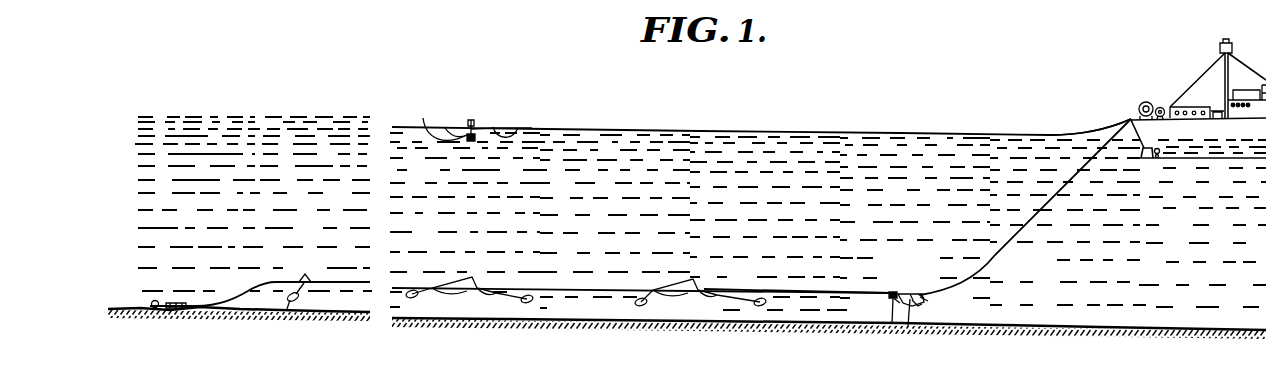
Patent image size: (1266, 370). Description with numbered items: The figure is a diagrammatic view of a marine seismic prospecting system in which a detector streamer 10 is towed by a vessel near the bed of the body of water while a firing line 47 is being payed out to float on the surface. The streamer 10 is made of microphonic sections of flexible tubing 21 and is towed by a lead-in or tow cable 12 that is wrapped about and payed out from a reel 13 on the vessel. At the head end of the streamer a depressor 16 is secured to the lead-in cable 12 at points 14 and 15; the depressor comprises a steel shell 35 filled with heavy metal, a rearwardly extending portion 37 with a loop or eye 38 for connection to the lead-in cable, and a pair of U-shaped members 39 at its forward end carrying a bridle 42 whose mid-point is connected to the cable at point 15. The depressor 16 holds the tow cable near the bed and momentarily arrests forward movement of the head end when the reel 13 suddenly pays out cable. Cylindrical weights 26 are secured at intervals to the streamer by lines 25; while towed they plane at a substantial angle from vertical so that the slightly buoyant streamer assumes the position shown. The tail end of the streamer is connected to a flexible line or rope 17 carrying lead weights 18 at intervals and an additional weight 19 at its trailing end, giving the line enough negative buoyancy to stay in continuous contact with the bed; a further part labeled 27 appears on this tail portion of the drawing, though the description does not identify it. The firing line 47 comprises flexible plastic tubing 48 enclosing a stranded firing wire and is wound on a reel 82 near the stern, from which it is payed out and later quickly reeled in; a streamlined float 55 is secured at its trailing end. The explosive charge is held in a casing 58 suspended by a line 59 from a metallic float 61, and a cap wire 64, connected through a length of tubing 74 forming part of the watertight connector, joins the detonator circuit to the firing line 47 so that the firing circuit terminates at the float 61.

The detector streamer 10 is at (618, 286).
The lead-in or tow cable 12 is at (1007, 251).
The reel 13 is at (1140, 105).
The point 14 is at (893, 292).
The point 15 is at (922, 295).
The depressor 16 is at (919, 305).
The flexible line or rope 17 is at (210, 302).
The weights 18 is at (178, 309).
The additional weight 19 is at (152, 309).
The flexible tubing 21 is at (732, 287).
The lines 25 is at (306, 292).
The cylindrical weights 26 is at (290, 302).
The raised pipeline portion 27 is at (292, 282).
The steel shell 35 is at (910, 299).
The rearwardly extending portion 37 is at (893, 298).
The loop or eye 38 is at (893, 298).
The U-shaped members 39 is at (924, 300).
The bridle 42 is at (913, 295).
The firing line 47 is at (1091, 130).
The tubing 48 is at (772, 131).
The streamlined float 55 is at (501, 127).
The casing 58 is at (428, 123).
The line 59 is at (462, 128).
The metallic float 61 is at (471, 119).
The line or cap wire 64 is at (477, 129).
The tubing 74 is at (520, 128).
The reel 82 is at (1160, 107).